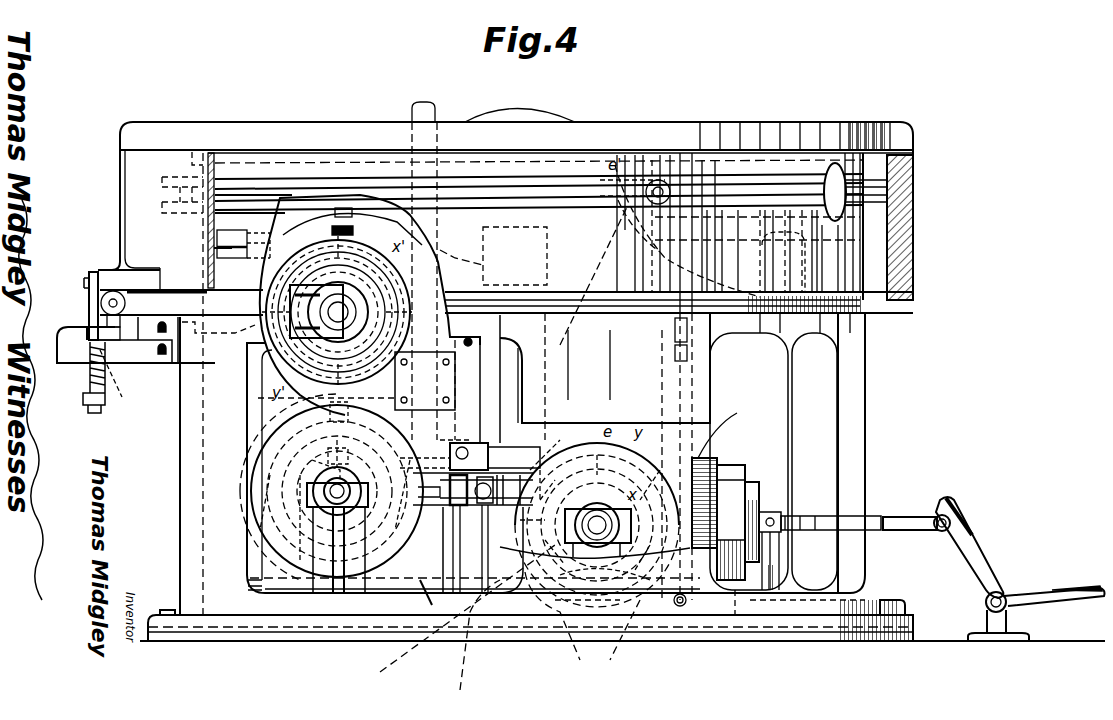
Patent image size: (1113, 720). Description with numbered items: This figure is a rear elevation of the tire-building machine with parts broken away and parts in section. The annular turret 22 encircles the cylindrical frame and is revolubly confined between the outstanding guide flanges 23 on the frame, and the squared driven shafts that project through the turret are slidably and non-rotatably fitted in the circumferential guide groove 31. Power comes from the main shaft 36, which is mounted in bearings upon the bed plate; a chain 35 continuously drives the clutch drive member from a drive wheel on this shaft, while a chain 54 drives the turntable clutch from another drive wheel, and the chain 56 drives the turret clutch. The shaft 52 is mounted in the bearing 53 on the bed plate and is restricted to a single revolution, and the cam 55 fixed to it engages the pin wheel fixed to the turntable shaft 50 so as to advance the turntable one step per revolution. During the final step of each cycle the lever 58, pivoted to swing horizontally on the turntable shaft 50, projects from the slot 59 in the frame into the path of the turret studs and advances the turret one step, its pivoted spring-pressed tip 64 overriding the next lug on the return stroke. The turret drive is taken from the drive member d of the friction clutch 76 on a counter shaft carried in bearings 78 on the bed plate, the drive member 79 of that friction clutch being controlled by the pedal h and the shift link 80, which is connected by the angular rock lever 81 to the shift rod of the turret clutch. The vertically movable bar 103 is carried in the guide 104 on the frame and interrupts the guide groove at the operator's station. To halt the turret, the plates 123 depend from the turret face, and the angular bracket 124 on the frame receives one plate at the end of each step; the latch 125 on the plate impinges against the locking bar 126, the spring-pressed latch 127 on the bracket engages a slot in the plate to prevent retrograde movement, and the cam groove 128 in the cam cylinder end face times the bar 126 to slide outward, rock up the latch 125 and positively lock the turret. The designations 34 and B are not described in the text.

The vertically movable bar 103 is at (418, 120).
The guide flanges 23 is at (822, 122).
The circumferential guide groove 31 is at (878, 188).
The annular turret 22 is at (905, 245).
The slot 59 is at (222, 236).
The tip of the lever 64 is at (214, 248).
The lever 58 is at (392, 222).
The cam groove 128 is at (292, 293).
The plates 123 is at (92, 300).
The locking bar 126 is at (247, 327).
The angular bracket 124 is at (82, 350).
The latch 125 is at (110, 322).
The spring-pressed latch 127 is at (112, 390).
The cam 55 is at (286, 420).
The bearing 53 is at (332, 478).
The shaft 52 is at (317, 509).
The guide 104 is at (425, 381).
The rod 34 is at (660, 258).
The chain 35 is at (576, 368).
The sprockets 56 is at (483, 352).
The turntable shaft 50 is at (545, 438).
The main shaft 36 is at (595, 523).
The chain 54 is at (560, 600).
The friction clutch 76 is at (732, 466).
The drive member 79 is at (762, 506).
The bearings 78 is at (798, 512).
The shift link 80 is at (896, 531).
The angular rock lever 81 is at (810, 638).
The drive member d is at (718, 431).
The pivot B is at (968, 547).
The pedal h is at (1036, 603).